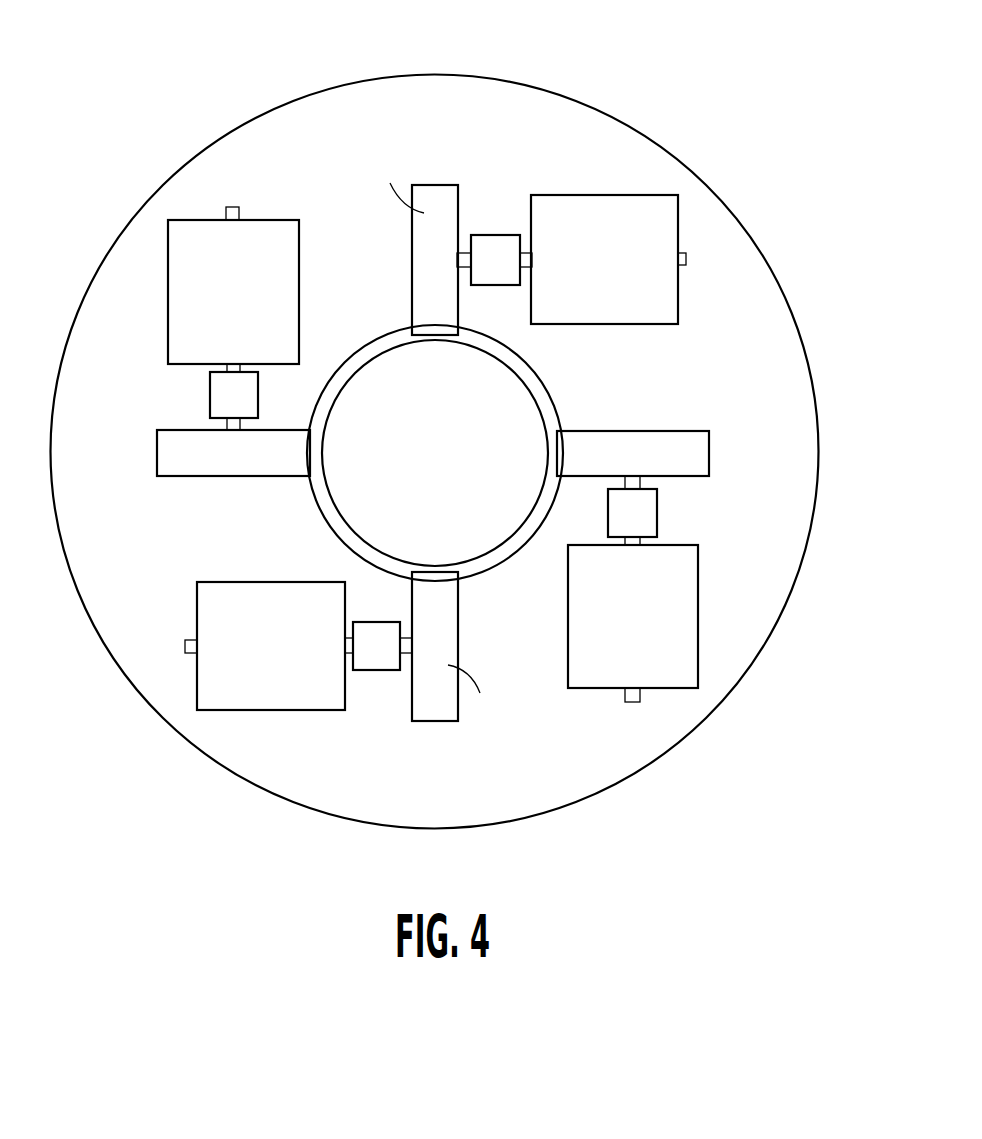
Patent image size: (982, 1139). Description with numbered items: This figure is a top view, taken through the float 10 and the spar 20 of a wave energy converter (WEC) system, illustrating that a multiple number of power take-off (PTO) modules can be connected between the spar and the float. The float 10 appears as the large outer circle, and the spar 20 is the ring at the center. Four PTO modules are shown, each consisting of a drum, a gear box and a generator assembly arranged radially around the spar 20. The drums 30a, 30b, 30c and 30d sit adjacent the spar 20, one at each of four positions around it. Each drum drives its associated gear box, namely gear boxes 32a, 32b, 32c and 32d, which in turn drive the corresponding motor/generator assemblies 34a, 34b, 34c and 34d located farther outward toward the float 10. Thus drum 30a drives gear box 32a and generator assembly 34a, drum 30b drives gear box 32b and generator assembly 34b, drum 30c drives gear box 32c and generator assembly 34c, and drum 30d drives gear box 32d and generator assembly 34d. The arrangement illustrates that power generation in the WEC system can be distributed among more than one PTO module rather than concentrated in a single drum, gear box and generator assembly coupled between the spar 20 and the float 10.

The float 10 is at (352, 103).
The spar 20 is at (512, 398).
The drum 30a is at (435, 185).
The drum 30b is at (709, 455).
The drum 30c is at (437, 721).
The drum 30d is at (167, 477).
The gear box 32a is at (497, 235).
The gear box 32b is at (657, 507).
The gear box 32c is at (380, 670).
The gear box 32d is at (210, 392).
The motor/generator assembly 34a is at (635, 195).
The motor/generator assembly 34b is at (672, 688).
The motor/generator assembly 34c is at (197, 698).
The motor/generator assembly 34d is at (180, 217).